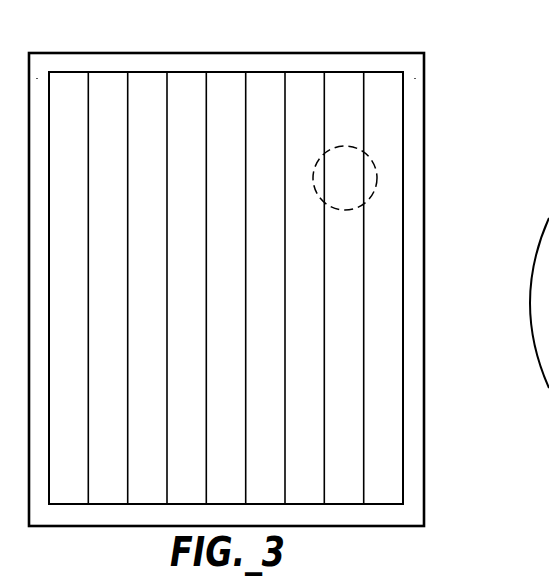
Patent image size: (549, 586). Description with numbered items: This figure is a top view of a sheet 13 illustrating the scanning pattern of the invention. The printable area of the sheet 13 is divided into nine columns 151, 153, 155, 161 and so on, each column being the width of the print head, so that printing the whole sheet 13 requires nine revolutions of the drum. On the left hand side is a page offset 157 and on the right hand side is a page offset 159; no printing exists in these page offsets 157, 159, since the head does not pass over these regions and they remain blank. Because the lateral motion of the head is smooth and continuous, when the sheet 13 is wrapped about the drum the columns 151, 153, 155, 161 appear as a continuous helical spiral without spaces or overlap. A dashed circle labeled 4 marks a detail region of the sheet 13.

The sheet 13 is at (431, 438).
The column 151 is at (70, 78).
The column 153 is at (103, 78).
The column 155 is at (152, 78).
The page offset 157 is at (37, 78).
The page offset 159 is at (415, 80).
The column 161 is at (341, 78).
The detail region shown in FIG. 4 is at (373, 162).